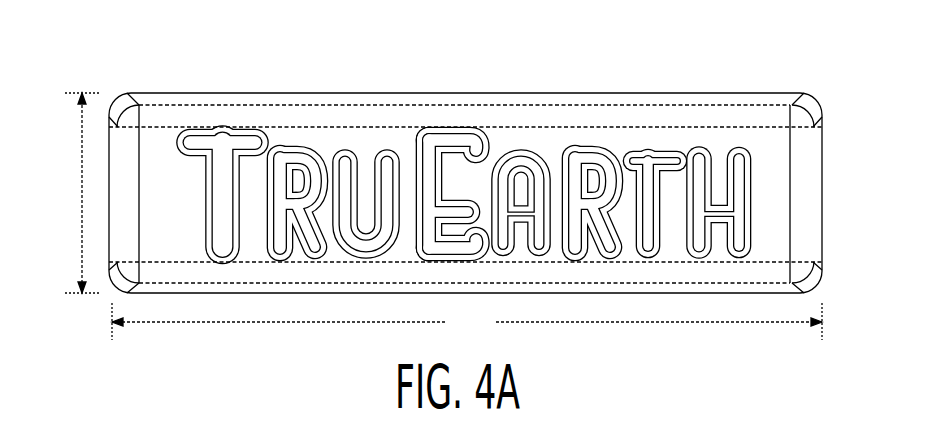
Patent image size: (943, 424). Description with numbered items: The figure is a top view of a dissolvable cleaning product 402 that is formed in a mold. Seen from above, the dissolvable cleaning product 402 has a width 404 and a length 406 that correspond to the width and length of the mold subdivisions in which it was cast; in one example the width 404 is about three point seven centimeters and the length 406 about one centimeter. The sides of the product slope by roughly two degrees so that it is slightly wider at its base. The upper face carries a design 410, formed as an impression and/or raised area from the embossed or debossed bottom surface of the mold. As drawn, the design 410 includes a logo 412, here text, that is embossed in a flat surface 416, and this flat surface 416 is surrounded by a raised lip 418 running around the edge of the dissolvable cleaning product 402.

The dissolvable cleaning product 402 is at (431, 146).
The width 404 is at (490, 335).
The length 406 is at (100, 198).
The design 410 is at (543, 132).
The logo 412 is at (223, 150).
The flat surface 416 is at (337, 138).
The raised lip 418 is at (473, 112).